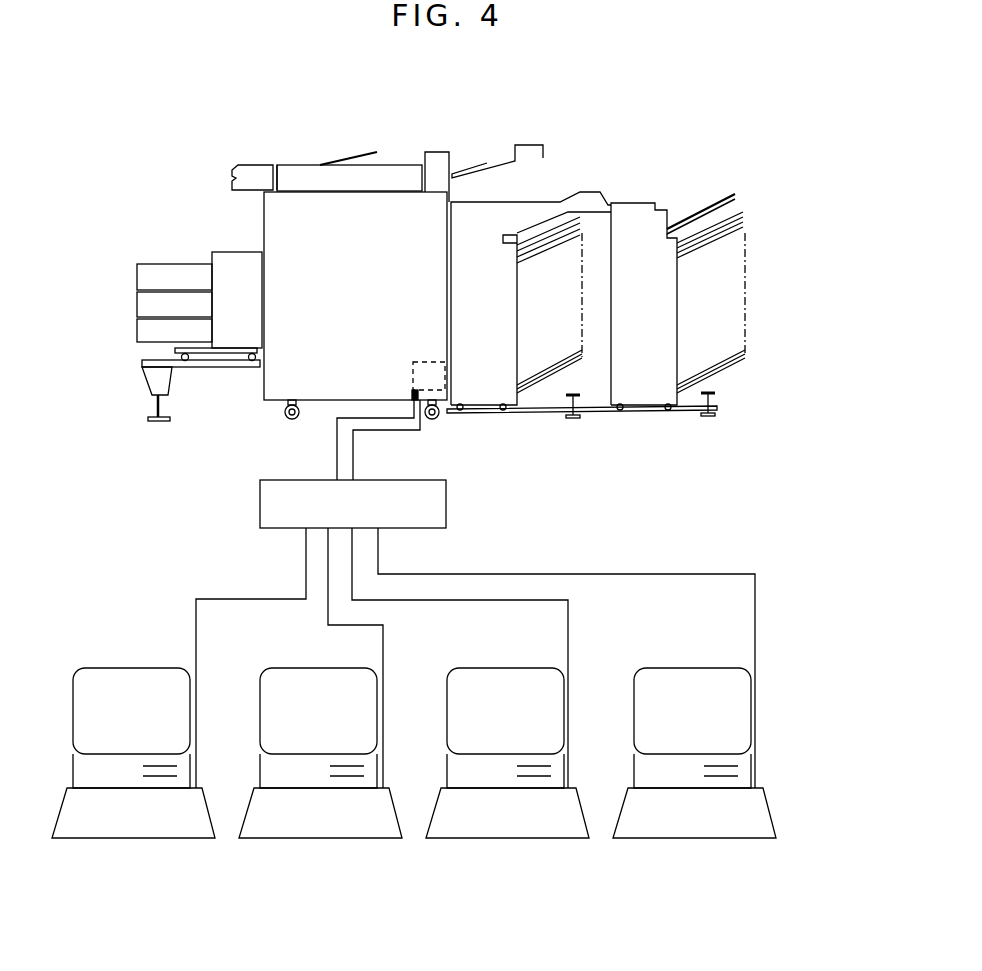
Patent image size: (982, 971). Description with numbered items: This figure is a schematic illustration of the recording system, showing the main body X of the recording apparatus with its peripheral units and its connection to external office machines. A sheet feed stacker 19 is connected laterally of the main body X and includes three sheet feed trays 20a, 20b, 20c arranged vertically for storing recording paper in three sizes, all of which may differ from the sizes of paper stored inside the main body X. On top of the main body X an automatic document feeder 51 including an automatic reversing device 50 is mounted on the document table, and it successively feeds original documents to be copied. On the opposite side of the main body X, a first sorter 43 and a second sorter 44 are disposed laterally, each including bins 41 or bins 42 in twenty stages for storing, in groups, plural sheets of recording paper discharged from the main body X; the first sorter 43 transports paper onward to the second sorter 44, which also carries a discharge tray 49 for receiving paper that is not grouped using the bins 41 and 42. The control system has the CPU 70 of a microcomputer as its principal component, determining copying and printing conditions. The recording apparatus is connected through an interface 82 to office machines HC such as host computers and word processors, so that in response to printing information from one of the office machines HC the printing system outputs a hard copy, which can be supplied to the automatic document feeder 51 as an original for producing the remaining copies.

The sheet feed stacker 19 is at (220, 252).
The sheet feed tray 20a is at (142, 264).
The sheet feed tray 20b is at (142, 305).
The sheet feed tray 20c is at (142, 328).
The bins 41 is at (551, 395).
The bins 42 is at (735, 380).
The first sorter 43 is at (482, 397).
The second sorter 44 is at (647, 395).
The discharge tray 49 is at (735, 194).
The automatic reversing device 50 is at (247, 165).
The automatic document feeder 51 is at (314, 155).
The CPU 70 is at (413, 362).
The interface 82 is at (446, 513).
The main body X is at (266, 388).
The office machines HC is at (252, 836).